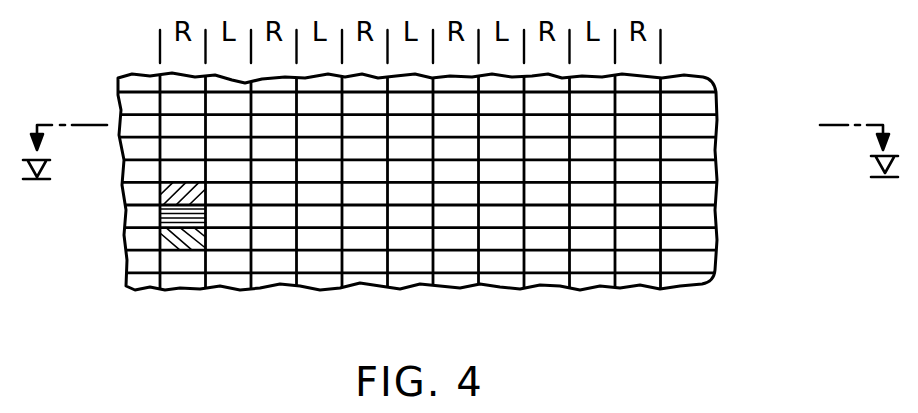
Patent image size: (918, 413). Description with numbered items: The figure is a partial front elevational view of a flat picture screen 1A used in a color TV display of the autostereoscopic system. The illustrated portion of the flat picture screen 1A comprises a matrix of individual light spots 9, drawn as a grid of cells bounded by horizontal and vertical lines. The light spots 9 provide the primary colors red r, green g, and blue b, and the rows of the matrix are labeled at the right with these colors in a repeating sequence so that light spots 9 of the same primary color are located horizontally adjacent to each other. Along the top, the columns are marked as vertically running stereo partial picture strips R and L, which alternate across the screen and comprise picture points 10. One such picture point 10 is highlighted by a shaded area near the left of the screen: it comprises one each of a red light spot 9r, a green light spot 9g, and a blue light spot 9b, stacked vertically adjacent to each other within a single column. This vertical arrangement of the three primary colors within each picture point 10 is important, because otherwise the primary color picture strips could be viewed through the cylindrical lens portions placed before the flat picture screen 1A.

The flat picture screen 1A is at (712, 80).
The light spots 9 is at (132, 184).
The red light spot 9r is at (176, 190).
The green light spot 9g is at (180, 222).
The blue light spot 9b is at (182, 237).
The picture point 10 is at (232, 250).
The blue b is at (700, 100).
The red r is at (697, 125).
The green g is at (702, 145).